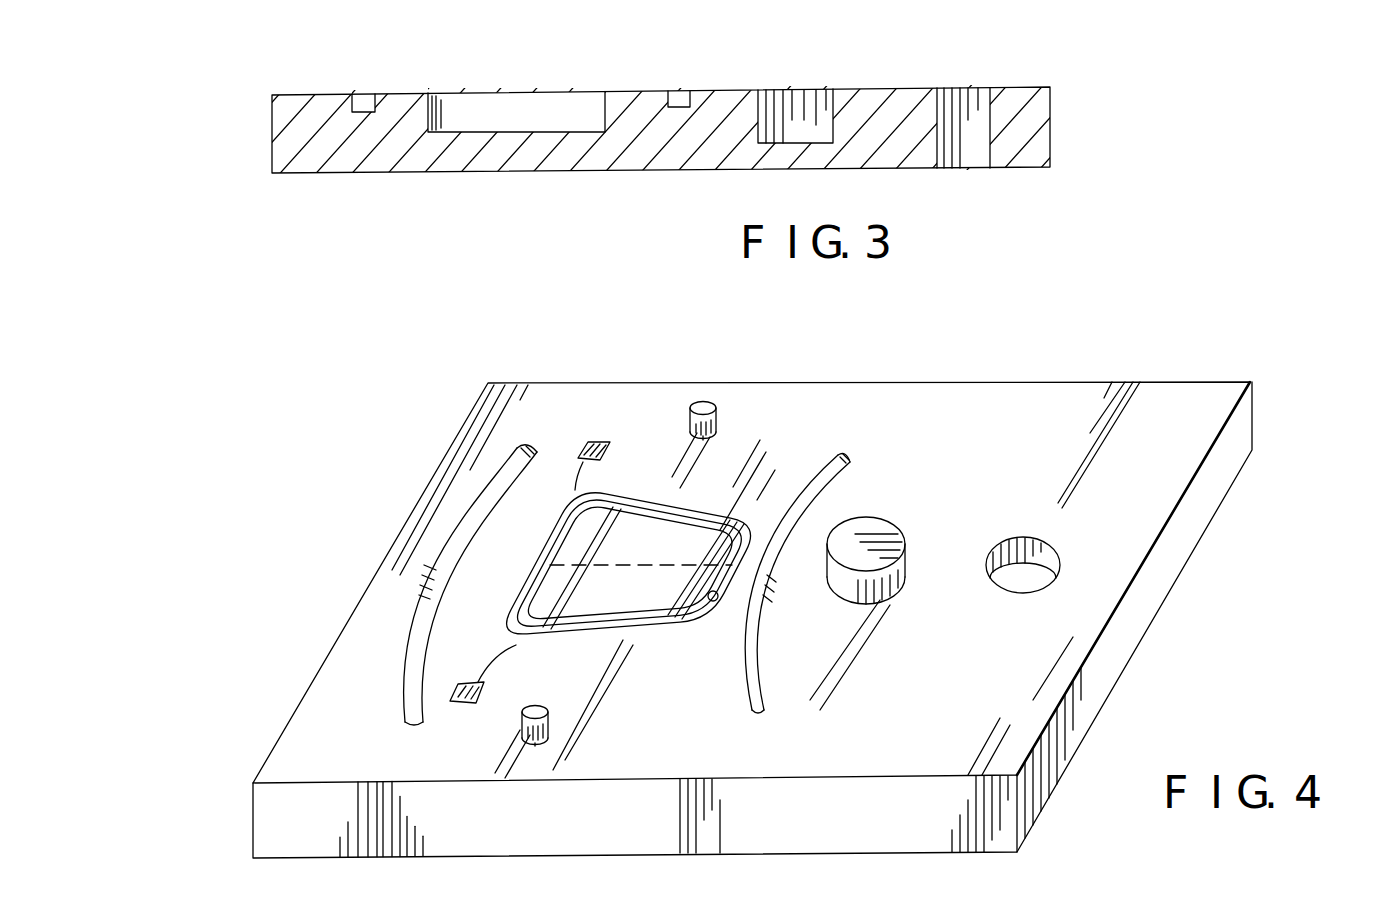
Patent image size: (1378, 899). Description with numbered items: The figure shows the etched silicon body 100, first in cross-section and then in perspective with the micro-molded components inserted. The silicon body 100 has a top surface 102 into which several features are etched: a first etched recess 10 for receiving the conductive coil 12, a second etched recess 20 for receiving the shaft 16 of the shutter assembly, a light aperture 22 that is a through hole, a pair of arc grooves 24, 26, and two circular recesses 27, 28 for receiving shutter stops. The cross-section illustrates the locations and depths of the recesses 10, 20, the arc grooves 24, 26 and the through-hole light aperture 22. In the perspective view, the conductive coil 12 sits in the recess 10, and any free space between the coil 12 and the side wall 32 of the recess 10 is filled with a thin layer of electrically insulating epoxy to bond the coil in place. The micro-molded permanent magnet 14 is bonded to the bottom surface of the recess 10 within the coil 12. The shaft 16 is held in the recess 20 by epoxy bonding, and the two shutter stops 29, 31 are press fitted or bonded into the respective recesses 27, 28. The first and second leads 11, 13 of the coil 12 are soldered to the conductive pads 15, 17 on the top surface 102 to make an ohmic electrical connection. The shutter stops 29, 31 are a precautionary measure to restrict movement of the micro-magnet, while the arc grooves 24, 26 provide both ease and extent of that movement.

In FIG. 3, the silicon body 100 is at (1052, 127).
In FIG. 4, the silicon body 100 is at (1158, 570).
In FIG. 4, the top surface 102 is at (1163, 413).
In FIG. 3, the first etched recess 10 is at (537, 113).
In FIG. 4, the first etched recess 10 is at (680, 628).
In FIG. 4, the first lead 11 is at (574, 478).
In FIG. 4, the conductive coil 12 is at (683, 498).
In FIG. 4, the second lead 13 is at (498, 658).
In FIG. 4, the micro-molded permanent magnet 14 is at (643, 612).
In FIG. 4, the conductive pad 15 is at (596, 440).
In FIG. 4, the shaft 16 is at (868, 530).
In FIG. 4, the conductive pad 17 is at (452, 704).
In FIG. 3, the second etched recess 20 is at (818, 100).
In FIG. 4, the second etched recess 20 is at (897, 600).
In FIG. 3, the light aperture 22 is at (975, 95).
In FIG. 4, the light aperture 22 is at (1022, 592).
In FIG. 3, the arc groove 24 is at (370, 96).
In FIG. 4, the arc groove 24 is at (478, 500).
In FIG. 3, the arc groove 26 is at (680, 95).
In FIG. 4, the arc groove 26 is at (852, 465).
In FIG. 4, the circular recess 27 is at (716, 430).
In FIG. 4, the circular recess 28 is at (548, 744).
In FIG. 4, the shutter stop 29 is at (706, 407).
In FIG. 4, the shutter stop 31 is at (526, 714).
In FIG. 4, the side wall 32 is at (715, 602).